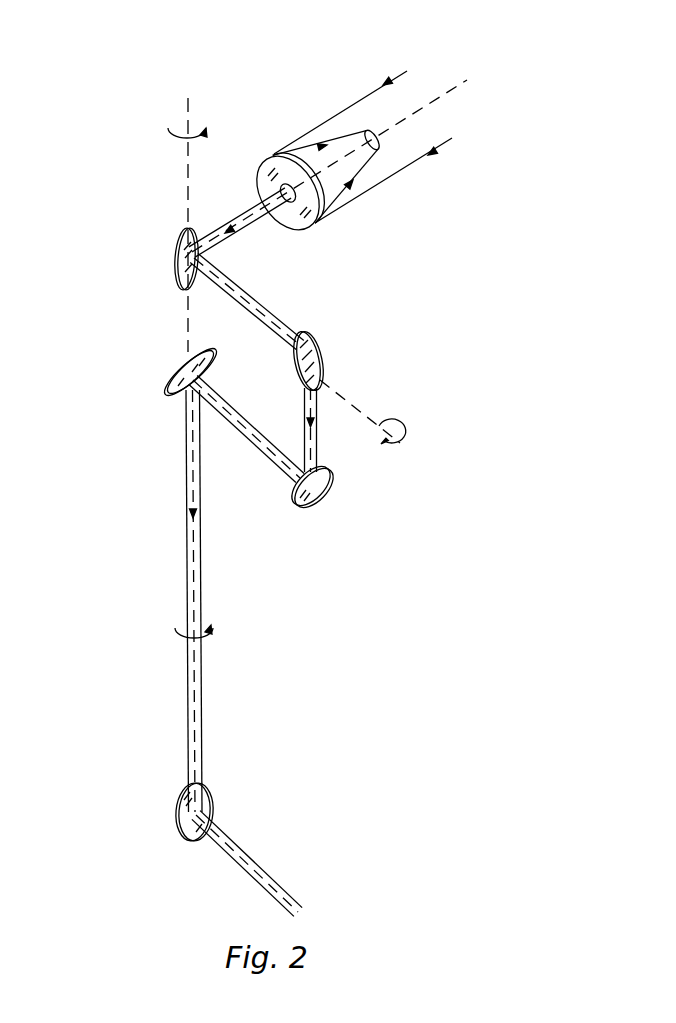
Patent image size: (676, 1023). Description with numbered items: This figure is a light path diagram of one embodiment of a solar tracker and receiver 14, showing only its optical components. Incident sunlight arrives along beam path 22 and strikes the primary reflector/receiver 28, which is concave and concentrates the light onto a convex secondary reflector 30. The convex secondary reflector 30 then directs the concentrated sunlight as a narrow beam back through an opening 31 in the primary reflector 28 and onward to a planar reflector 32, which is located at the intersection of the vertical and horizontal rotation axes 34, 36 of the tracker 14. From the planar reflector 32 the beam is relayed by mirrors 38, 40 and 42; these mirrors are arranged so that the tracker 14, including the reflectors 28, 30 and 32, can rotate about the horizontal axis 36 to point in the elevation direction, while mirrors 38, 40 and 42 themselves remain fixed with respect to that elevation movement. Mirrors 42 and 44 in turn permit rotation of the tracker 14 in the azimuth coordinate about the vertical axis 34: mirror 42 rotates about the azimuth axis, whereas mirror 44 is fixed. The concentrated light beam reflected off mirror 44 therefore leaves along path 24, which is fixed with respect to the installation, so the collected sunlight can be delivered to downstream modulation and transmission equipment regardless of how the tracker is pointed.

The solar tracker and receiver 14 is at (84, 566).
The beam path 22 is at (443, 98).
The path 24 is at (243, 847).
The primary reflector/receiver 28 is at (273, 157).
The convex secondary reflector 30 is at (367, 137).
The opening 31 is at (292, 207).
The planar reflector 32 is at (178, 248).
The vertical rotation axis 34 is at (185, 110).
The horizontal rotation axis 36 is at (348, 388).
The mirror 38 is at (315, 342).
The mirror 40 is at (320, 495).
The mirror 42 is at (182, 368).
The mirror 44 is at (180, 798).